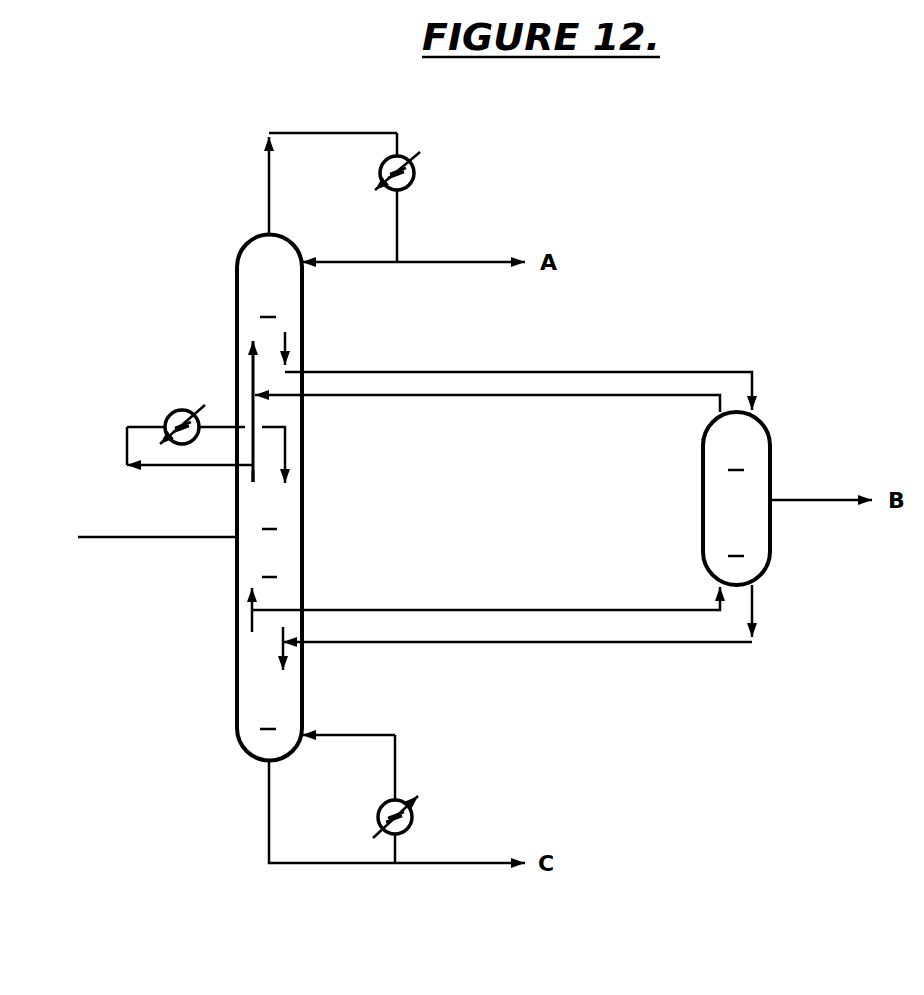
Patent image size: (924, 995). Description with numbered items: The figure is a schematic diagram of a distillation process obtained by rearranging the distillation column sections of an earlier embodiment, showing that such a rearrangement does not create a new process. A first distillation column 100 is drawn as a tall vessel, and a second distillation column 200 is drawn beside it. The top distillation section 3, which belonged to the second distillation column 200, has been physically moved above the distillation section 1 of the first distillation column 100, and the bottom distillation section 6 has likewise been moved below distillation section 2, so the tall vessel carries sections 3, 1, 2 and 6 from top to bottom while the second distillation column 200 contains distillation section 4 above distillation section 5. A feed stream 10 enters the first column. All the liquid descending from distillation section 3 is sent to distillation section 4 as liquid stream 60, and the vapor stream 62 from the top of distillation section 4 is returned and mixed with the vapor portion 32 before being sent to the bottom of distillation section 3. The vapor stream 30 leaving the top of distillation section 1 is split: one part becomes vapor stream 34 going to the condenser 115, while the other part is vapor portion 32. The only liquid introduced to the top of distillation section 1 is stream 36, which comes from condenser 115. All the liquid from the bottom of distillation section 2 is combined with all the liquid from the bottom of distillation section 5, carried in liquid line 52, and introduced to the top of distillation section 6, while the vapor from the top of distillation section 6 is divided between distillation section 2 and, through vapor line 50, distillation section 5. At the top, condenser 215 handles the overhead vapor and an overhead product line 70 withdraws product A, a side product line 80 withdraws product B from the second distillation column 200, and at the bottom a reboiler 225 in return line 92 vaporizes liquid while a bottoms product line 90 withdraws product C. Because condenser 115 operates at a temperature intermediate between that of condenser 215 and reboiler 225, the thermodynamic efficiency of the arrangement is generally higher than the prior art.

The distillation section 1 is at (268, 515).
The distillation section 2 is at (268, 563).
The top distillation section 3 is at (268, 303).
The distillation section 4 is at (736, 456).
The distillation section 5 is at (736, 542).
The bottom distillation section 6 is at (268, 715).
The feed line ABC 10 is at (184, 538).
The vapor stream 30 is at (249, 473).
The vapor portion 32 is at (248, 408).
The vapor stream 34 is at (126, 455).
The stream 36 is at (289, 442).
The vapor line to side column 50 is at (571, 612).
The liquid return line from side column 52 is at (572, 644).
The liquid stream 60 is at (571, 372).
The vapor stream 62 is at (572, 397).
The overhead product line A 70 is at (452, 262).
The side draw product line B 80 is at (807, 500).
The bottoms product line C 90 is at (451, 867).
The reboiler return line 92 is at (356, 735).
The first distillation column 100 is at (307, 568).
The condenser 115 is at (169, 412).
The second distillation column 200 is at (772, 531).
The condenser 215 is at (421, 151).
The reboiler 225 is at (434, 801).